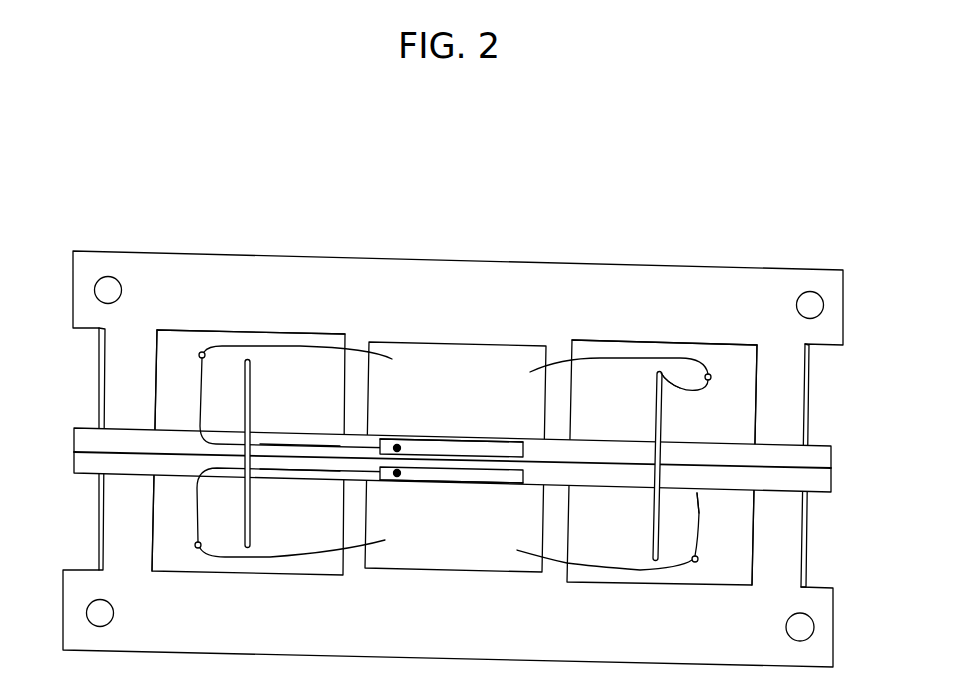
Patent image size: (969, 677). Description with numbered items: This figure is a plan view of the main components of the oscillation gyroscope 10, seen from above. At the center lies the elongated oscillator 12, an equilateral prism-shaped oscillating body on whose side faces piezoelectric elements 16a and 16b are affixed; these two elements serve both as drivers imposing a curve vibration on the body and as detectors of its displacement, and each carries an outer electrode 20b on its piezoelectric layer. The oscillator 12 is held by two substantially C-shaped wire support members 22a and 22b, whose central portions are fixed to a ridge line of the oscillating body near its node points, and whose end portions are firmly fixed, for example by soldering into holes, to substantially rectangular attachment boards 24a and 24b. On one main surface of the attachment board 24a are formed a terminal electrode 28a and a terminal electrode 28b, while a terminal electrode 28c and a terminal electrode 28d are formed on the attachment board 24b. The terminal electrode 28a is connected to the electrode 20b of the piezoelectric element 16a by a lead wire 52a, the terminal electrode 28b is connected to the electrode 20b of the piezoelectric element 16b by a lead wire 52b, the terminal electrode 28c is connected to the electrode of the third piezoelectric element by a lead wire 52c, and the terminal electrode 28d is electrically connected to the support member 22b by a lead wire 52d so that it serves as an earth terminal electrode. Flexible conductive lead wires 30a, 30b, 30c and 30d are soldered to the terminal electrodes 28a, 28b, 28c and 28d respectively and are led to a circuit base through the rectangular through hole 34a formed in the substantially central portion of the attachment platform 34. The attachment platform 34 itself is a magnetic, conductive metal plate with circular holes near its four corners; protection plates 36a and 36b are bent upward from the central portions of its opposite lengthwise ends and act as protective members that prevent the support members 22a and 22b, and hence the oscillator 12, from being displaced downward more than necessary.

The oscillation gyroscope 10 is at (726, 205).
The oscillator 12 is at (842, 454).
The piezoelectric element 16a is at (480, 491).
The piezoelectric element 16b is at (482, 439).
The electrode 20b is at (435, 452).
The support member 22a is at (252, 359).
The support member 22b is at (657, 371).
The attachment board 24a is at (165, 378).
The attachment board 24b is at (743, 388).
The terminal electrode 28a is at (198, 548).
The terminal electrode 28b is at (203, 351).
The terminal electrode 28c is at (697, 561).
The terminal electrode 28d is at (710, 373).
The lead wire 30a is at (353, 553).
The lead wire 30b is at (358, 350).
The lead wire 30c is at (547, 563).
The lead wire 30d is at (557, 362).
The attachment platform 34 is at (448, 262).
The through hole 34a is at (453, 352).
The protection plate 36a is at (100, 510).
The protection plate 36b is at (803, 533).
The lead wire 52a is at (301, 474).
The lead wire 52b is at (302, 446).
The lead wire 52c is at (697, 528).
The lead wire 52d is at (687, 393).